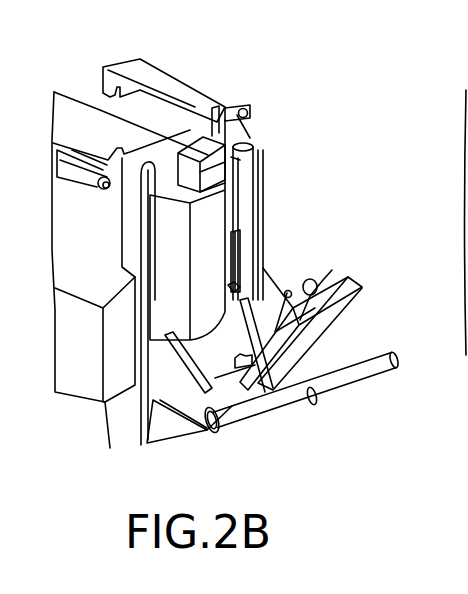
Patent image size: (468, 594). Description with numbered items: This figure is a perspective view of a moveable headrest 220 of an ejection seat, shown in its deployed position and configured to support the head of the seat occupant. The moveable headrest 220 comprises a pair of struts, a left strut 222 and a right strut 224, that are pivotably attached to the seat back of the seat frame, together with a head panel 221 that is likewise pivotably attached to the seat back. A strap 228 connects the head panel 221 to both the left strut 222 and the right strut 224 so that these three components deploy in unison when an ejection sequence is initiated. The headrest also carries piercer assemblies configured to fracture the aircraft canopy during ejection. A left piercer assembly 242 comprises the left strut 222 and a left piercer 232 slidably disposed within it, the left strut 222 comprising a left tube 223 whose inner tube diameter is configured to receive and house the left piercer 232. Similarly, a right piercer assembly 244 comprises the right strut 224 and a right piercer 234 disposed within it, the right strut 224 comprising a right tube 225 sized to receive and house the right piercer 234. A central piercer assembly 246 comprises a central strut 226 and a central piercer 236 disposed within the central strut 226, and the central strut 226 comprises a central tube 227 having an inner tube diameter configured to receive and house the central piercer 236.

The moveable headrest 220 is at (300, 112).
The head panel 221 is at (348, 284).
The left strut 222 is at (373, 352).
The left tube 223 is at (345, 363).
The right strut 224 is at (309, 400).
The right tube 225 is at (275, 428).
The central strut 226 is at (250, 300).
The central tube 227 is at (308, 279).
The strap 228 is at (364, 290).
The left piercer 232 is at (356, 362).
The right piercer 234 is at (249, 418).
The central piercer 236 is at (288, 292).
The left piercer assembly 242 is at (401, 378).
The right piercer assembly 244 is at (326, 404).
The central piercer assembly 246 is at (318, 258).